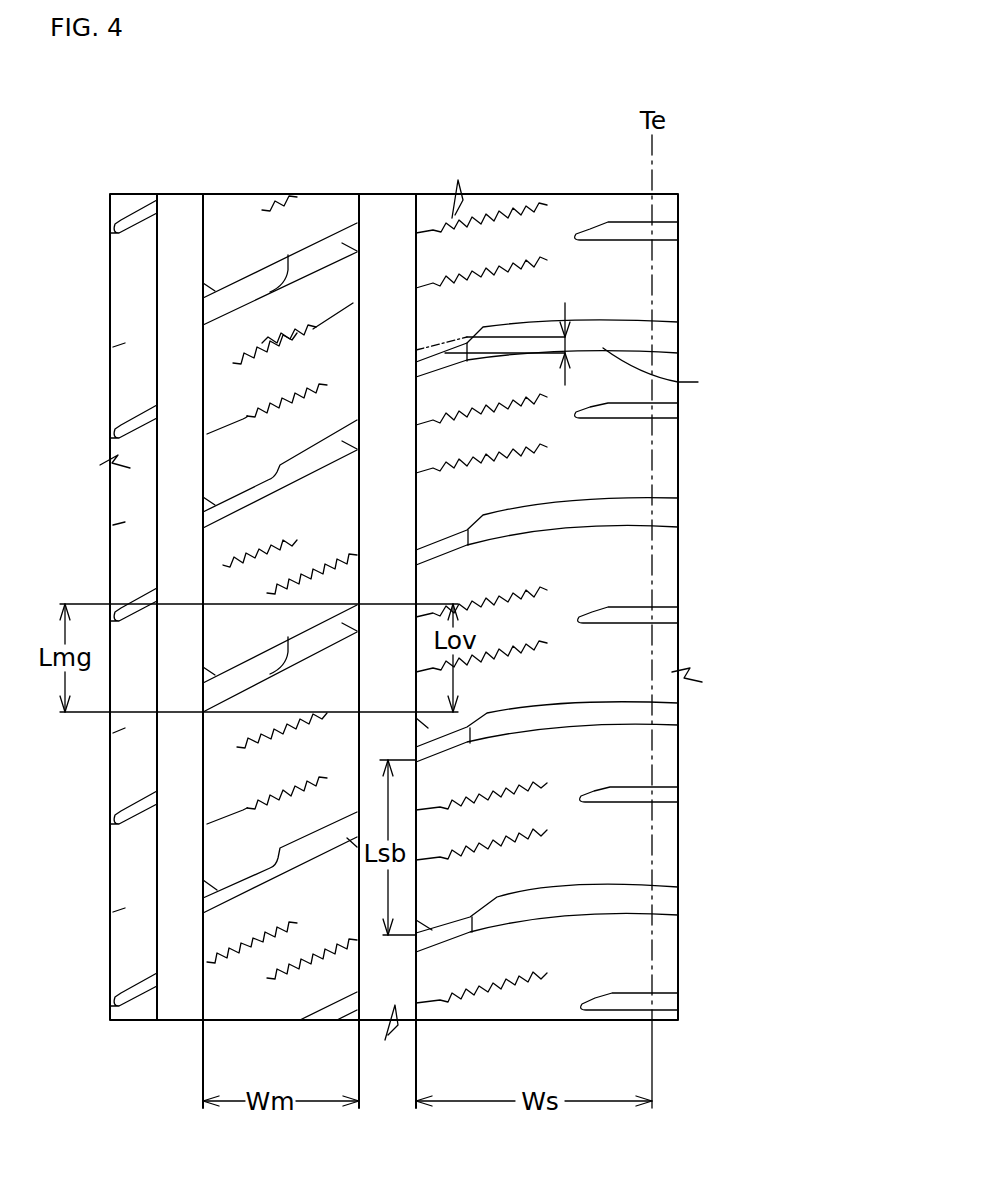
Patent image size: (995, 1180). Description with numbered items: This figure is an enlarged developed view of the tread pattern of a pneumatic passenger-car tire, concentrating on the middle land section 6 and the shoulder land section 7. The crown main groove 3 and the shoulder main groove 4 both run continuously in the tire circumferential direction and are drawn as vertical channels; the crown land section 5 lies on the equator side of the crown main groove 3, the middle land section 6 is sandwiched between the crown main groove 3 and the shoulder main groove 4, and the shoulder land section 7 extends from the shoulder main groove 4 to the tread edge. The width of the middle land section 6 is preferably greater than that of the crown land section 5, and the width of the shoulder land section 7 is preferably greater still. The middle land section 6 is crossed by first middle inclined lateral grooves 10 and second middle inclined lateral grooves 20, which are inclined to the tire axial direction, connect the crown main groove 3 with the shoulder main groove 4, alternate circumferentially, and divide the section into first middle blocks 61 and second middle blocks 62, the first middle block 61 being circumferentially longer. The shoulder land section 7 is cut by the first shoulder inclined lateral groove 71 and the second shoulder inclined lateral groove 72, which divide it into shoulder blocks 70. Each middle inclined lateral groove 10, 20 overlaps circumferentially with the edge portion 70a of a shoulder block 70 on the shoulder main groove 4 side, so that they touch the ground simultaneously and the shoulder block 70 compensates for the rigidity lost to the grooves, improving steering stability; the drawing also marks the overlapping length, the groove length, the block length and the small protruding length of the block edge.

The crown main groove 3 is at (178, 243).
The shoulder main groove 4 is at (385, 238).
The crown land section 5 is at (138, 257).
The middle land section 6 is at (318, 215).
The shoulder land section 7 is at (562, 218).
The first middle inclined lateral groove 10 is at (248, 677).
The second middle inclined lateral groove 20 is at (285, 467).
The first middle block 61 is at (262, 768).
The second middle block 62 is at (233, 587).
The shoulder block 70 is at (557, 460).
The edge portion 70a is at (425, 448).
The first shoulder inclined lateral groove 71 is at (608, 522).
The second shoulder inclined lateral groove 72 is at (603, 725).